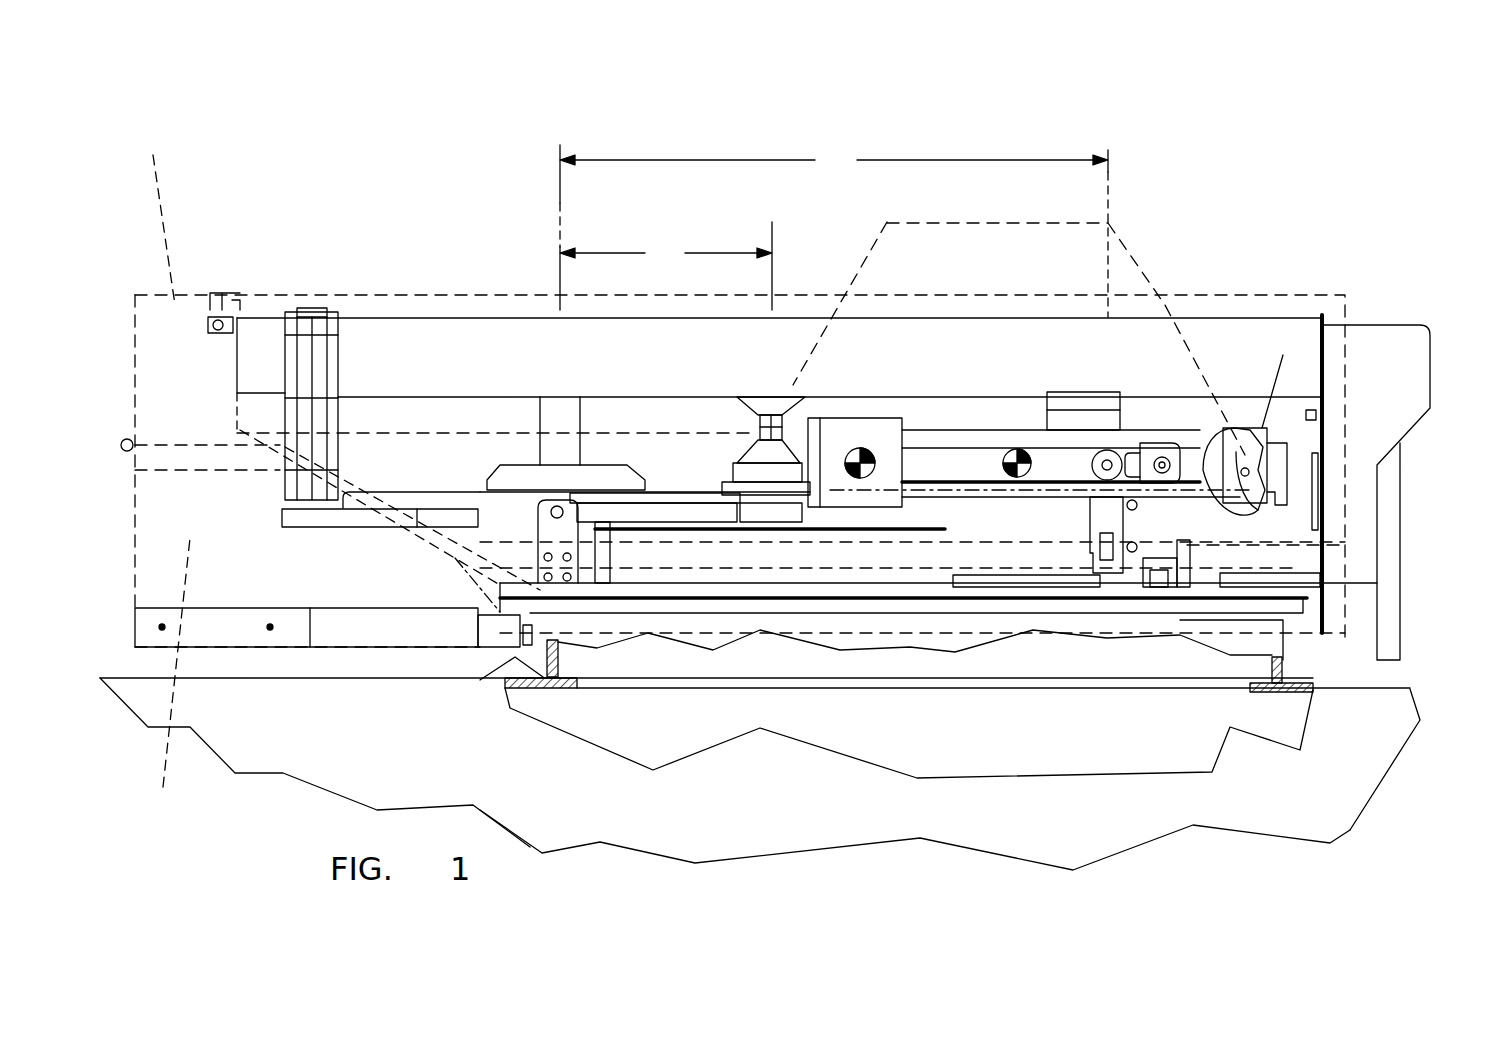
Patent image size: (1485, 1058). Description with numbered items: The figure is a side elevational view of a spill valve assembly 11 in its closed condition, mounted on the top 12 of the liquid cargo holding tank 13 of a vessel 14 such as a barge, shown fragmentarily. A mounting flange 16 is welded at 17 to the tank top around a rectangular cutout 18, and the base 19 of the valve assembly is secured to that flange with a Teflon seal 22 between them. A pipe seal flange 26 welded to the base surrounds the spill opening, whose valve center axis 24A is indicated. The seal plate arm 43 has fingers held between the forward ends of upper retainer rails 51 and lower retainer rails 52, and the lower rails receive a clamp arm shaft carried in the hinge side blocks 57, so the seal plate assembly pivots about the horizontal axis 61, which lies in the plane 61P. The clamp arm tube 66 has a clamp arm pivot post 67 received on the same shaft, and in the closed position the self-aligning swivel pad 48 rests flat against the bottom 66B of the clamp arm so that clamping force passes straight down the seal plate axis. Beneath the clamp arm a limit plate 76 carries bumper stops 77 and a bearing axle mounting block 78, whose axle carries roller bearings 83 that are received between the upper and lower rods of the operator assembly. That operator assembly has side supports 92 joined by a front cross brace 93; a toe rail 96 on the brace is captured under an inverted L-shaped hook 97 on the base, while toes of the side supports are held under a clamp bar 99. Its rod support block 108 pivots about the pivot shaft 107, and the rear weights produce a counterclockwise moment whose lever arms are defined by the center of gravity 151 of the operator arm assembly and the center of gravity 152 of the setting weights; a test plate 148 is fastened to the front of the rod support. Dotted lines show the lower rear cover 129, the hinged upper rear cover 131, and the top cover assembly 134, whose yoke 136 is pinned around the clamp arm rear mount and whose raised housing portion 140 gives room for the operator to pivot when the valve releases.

The valve assembly 11 is at (452, 150).
The upper rear cover 131 is at (153, 155).
The yoke 136 is at (213, 300).
The top cover assembly 134 is at (443, 293).
The plane containing the clamp arm pivot axis 61P is at (558, 190).
The clamp arm tube 66 is at (498, 317).
The housing portion 140 is at (990, 223).
The valve center axis 24A is at (770, 270).
The bumper stop 77 is at (1098, 405).
The limit plate 76 is at (1112, 455).
The bearing axle mounting block 78 is at (1060, 420).
The roller bearings 83 is at (1175, 445).
The pivot shaft 107 is at (1222, 412).
The center of gravity of the operator arm assembly 151 is at (1010, 452).
The rod support block 108 is at (1283, 355).
The upper retainer rails 51 is at (605, 478).
The swivel pad 48 is at (760, 402).
The center of gravity of the weights 152 is at (870, 452).
The clamp arm pivot post 67 is at (552, 417).
The bottom of the clamp arm 66B is at (717, 420).
The seal plate arm 43 is at (685, 497).
The test plate 148 is at (1270, 483).
The side supports 92 is at (1157, 520).
The base 19 is at (1068, 597).
The front cross brace 93 is at (1190, 553).
The horizontal axis of the clamp arm shaft 61 is at (550, 512).
The hinge side blocks 57 is at (555, 532).
The Teflon seal 22 is at (1380, 602).
The mounting flange 16 is at (1283, 663).
The weld 17 is at (513, 660).
The top of the tank 12 is at (1330, 688).
The liquid cargo holding tank 13 is at (940, 747).
The lower retainer rails 52 is at (606, 540).
The pipe seal flange 26 is at (733, 550).
The clamp bar 99 is at (1116, 560).
The inverted L-shaped hook 97 is at (1155, 565).
The toe rail 96 is at (1169, 572).
The rectangular cutout 18 is at (1182, 687).
The lower rear cover 129 is at (140, 676).
The vessel 14 is at (208, 680).